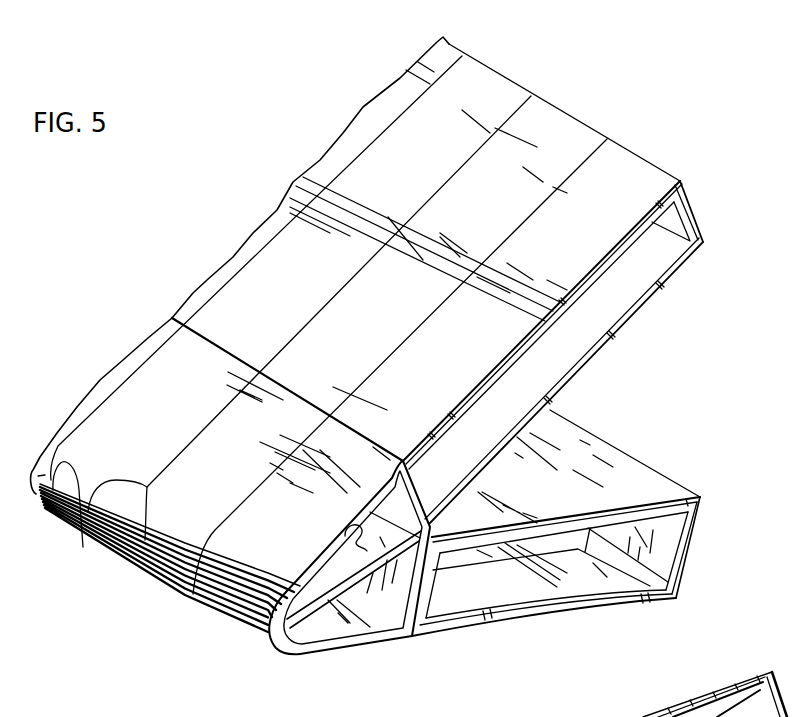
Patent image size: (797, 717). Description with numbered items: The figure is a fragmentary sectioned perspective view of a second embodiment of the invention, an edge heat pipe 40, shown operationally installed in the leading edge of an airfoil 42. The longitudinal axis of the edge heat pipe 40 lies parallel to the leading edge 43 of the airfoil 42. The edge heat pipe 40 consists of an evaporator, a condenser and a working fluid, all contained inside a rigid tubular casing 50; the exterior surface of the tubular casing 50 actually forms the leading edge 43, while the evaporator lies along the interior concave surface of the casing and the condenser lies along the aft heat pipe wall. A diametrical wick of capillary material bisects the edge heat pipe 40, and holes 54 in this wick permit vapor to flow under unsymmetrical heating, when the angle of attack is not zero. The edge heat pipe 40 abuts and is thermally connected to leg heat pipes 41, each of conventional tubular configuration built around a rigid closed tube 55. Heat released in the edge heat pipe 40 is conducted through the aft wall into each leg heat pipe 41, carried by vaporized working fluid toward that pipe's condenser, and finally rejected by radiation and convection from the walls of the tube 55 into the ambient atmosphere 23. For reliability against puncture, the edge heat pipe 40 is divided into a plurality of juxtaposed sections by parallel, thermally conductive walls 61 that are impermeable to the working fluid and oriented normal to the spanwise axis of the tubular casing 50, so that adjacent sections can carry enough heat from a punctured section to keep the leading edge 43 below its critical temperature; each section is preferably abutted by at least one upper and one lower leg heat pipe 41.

The ambient atmosphere 23 is at (666, 414).
The edge heat pipe 40 is at (328, 678).
The leg heat pipe 41 is at (720, 236).
The airfoil 42 is at (210, 217).
The leading edge 43 is at (278, 665).
The tubular casing 50 is at (70, 417).
The holes 54 is at (318, 566).
The tube 55 is at (660, 287).
The thermally conductive walls 61 is at (83, 547).